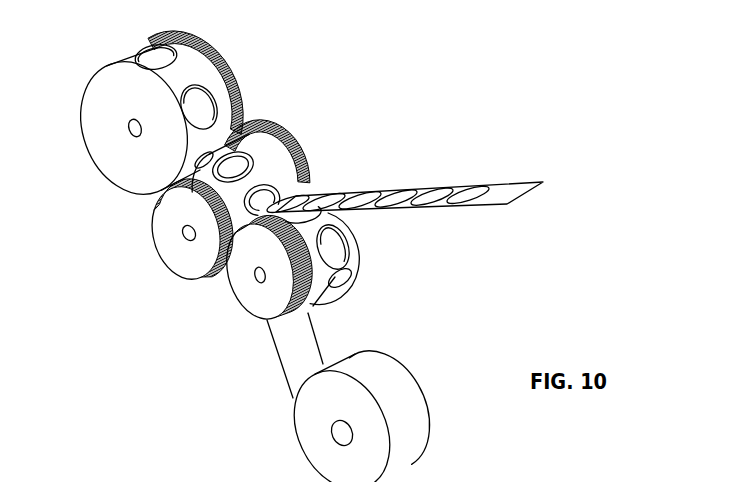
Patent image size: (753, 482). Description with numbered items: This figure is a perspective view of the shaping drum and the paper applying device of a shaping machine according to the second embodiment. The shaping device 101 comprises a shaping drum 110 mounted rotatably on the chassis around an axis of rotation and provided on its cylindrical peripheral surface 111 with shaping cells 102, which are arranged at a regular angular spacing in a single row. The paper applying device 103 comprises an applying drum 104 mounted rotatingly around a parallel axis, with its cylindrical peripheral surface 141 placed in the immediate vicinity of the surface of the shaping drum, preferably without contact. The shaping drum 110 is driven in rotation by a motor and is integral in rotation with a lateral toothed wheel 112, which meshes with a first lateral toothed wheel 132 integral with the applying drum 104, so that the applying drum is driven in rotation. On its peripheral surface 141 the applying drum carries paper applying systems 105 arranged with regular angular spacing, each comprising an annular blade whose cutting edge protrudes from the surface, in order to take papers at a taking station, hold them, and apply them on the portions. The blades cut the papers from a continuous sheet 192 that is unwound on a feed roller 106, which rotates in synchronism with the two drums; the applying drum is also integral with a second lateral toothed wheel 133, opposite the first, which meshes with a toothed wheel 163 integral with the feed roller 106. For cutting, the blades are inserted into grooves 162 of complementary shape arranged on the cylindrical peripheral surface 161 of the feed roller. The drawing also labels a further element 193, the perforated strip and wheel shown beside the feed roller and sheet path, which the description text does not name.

The shaping device 101 is at (150, 108).
The shaping cells 102 is at (152, 54).
The paper applying device 103 is at (165, 240).
The applying drum 104 is at (153, 203).
The paper applying system 105 is at (273, 148).
The feed roller 106 is at (311, 268).
The shaping drum 110 is at (118, 158).
The cylindrical peripheral surface 111 is at (126, 58).
The lateral toothed wheel 112 is at (229, 73).
The first lateral toothed wheel 132 is at (312, 180).
The second lateral toothed wheel 133 is at (169, 240).
The cylindrical peripheral surface 141 is at (268, 173).
The cylindrical peripheral surface 161 is at (335, 278).
The grooves 162 is at (350, 240).
The toothed wheel 163 is at (243, 297).
The continuous sheet 192 is at (281, 363).
The perforated strip / wheel 193 is at (462, 184).